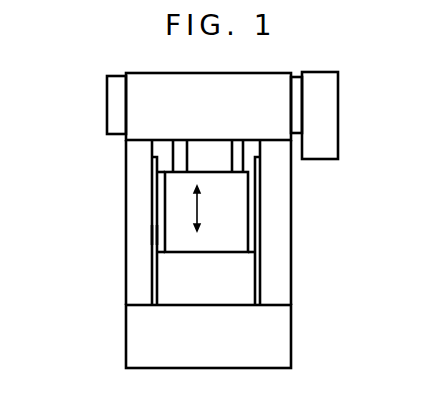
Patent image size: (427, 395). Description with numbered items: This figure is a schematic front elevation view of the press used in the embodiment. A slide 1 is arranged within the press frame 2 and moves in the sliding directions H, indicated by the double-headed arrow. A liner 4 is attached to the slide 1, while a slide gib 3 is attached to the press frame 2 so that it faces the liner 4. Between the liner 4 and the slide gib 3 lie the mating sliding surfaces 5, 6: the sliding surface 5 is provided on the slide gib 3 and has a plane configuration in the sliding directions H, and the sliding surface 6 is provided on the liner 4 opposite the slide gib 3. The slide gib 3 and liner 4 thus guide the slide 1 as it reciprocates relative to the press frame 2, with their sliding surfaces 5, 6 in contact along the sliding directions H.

The slide 1 is at (230, 202).
The press frame 2 is at (277, 258).
The slide gib 3 is at (155, 172).
The liner 4 is at (163, 201).
The sliding surface 5 is at (153, 233).
The sliding surface 6 is at (153, 233).